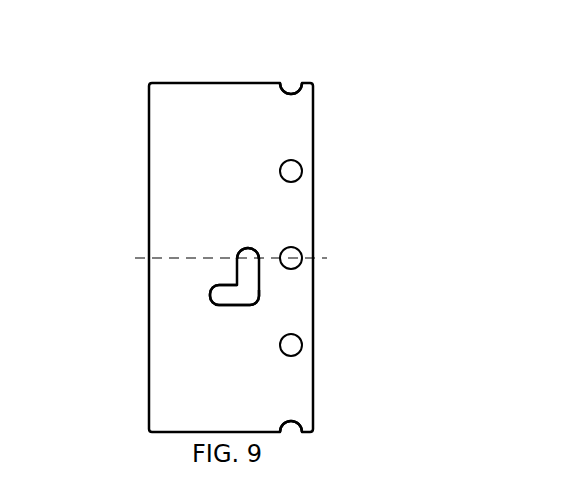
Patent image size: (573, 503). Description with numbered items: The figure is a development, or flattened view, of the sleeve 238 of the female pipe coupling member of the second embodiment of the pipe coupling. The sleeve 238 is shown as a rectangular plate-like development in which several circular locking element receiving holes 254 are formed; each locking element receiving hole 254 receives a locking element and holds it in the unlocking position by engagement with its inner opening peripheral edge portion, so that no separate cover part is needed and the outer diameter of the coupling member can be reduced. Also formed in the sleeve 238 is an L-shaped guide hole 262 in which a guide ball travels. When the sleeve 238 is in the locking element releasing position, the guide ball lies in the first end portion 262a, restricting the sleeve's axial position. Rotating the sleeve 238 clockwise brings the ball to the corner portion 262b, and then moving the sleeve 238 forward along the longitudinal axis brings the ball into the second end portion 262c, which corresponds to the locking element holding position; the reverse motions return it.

The sleeve 238 is at (190, 110).
The locking element receiving hole 254 is at (295, 430).
The L-shaped guide hole 262 is at (240, 277).
The first end portion 262a is at (247, 250).
The corner portion 262b is at (250, 303).
The second end portion 262c is at (215, 297).